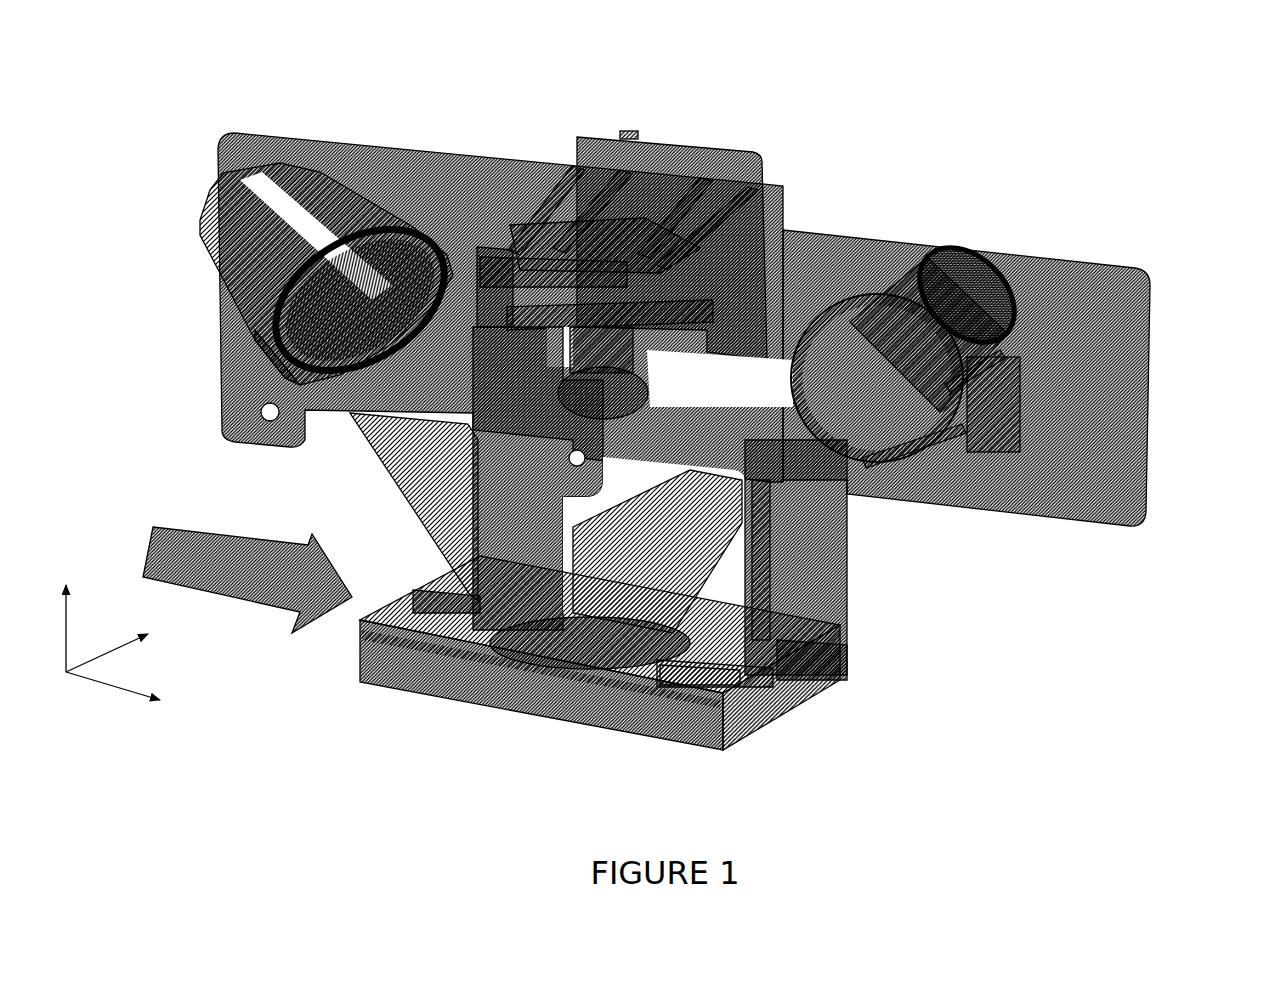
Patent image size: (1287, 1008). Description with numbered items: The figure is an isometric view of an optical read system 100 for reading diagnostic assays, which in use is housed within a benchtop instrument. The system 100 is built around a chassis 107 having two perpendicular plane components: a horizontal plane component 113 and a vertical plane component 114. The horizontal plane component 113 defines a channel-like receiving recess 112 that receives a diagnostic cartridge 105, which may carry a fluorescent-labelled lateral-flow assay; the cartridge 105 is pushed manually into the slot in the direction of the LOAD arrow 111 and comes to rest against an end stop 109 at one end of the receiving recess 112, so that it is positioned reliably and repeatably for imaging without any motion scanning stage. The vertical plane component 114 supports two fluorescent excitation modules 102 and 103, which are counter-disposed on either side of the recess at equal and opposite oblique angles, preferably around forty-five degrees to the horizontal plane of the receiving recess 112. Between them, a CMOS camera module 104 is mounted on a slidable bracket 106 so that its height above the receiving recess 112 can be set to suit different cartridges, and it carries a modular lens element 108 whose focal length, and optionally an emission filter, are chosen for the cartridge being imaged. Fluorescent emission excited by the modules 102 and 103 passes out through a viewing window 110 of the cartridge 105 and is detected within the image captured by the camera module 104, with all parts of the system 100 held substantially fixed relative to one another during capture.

The optical read system 100 is at (655, 439).
The fluorescent excitation module 102 is at (307, 222).
The fluorescent excitation module 103 is at (897, 292).
The CMOS camera module 104 is at (622, 344).
The diagnostic cartridge 105 is at (726, 682).
The slidable bracket 106 is at (714, 150).
The chassis 107 is at (1058, 254).
The modular lens element 108 is at (660, 430).
The end stop 109 is at (684, 690).
The viewing window 110 is at (675, 684).
The LOAD arrow 111 is at (162, 513).
The receiving recess 112 is at (761, 728).
The horizontal plane component 113 is at (482, 178).
The vertical plane component 114 is at (842, 680).